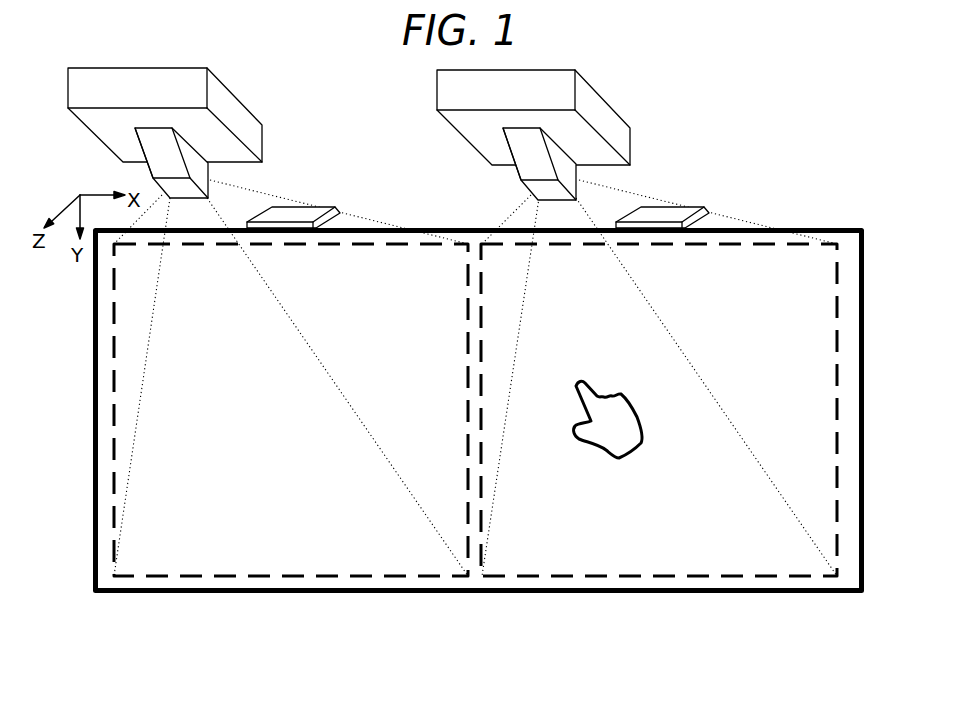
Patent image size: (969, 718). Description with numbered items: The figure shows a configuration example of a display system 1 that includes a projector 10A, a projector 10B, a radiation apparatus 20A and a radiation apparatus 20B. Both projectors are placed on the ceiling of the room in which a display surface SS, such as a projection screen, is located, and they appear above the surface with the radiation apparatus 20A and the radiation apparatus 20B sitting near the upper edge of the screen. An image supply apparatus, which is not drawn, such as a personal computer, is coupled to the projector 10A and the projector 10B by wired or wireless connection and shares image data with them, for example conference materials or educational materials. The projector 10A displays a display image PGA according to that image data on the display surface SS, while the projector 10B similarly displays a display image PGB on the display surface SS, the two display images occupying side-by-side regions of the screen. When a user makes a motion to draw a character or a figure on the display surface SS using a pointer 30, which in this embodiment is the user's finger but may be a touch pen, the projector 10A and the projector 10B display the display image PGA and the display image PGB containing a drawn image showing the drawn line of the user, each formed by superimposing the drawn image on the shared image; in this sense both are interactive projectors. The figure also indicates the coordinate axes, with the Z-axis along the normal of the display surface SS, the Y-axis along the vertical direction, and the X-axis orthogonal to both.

The display system 1 is at (479, 370).
The projector 10A is at (630, 138).
The projector 10B is at (263, 130).
The radiation apparatus 20A is at (712, 192).
The radiation apparatus 20B is at (338, 209).
The pointer 30 is at (608, 451).
The display image PGA is at (663, 576).
The display image PGB is at (403, 577).
The display surface SS is at (848, 577).